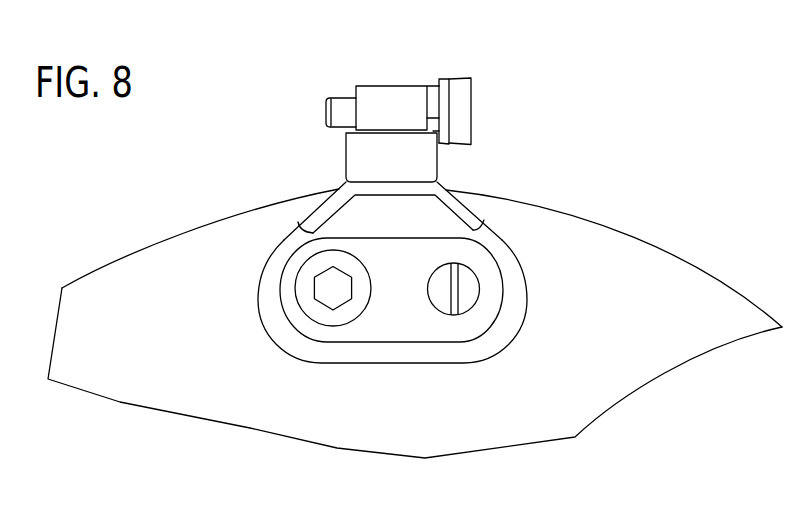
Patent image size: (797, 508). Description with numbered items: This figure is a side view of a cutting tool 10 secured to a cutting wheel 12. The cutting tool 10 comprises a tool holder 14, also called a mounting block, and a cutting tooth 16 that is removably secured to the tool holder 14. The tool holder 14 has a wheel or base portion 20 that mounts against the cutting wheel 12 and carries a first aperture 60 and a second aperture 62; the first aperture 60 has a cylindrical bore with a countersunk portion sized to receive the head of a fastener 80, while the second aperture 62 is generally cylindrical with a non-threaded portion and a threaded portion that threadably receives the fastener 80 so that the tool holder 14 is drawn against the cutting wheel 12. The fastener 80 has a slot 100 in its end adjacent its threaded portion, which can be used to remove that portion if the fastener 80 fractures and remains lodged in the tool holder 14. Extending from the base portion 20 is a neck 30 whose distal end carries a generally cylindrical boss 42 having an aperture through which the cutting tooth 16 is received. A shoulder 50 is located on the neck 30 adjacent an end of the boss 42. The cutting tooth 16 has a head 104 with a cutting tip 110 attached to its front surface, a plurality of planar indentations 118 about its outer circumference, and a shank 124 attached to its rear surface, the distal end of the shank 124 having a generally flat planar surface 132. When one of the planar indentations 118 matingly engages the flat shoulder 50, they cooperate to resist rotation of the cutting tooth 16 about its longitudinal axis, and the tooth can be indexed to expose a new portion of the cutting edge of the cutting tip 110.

The cutting tool 10 is at (258, 318).
The cutting wheel 12 is at (660, 277).
The tool holder 14 is at (503, 262).
The cutting tooth 16 is at (525, 77).
The base portion 20 is at (288, 235).
The neck 30 is at (355, 157).
The boss 42 is at (377, 92).
The shoulder 50 is at (432, 131).
The first aperture 60 is at (345, 325).
The second aperture 62 is at (432, 303).
The fastener 80 is at (317, 315).
The slot 100 is at (458, 308).
The head 104 is at (443, 80).
The cutting tip 110 is at (465, 125).
The planar indentations 118 is at (433, 93).
The shank 124 is at (338, 97).
The planar surface 132 is at (325, 110).